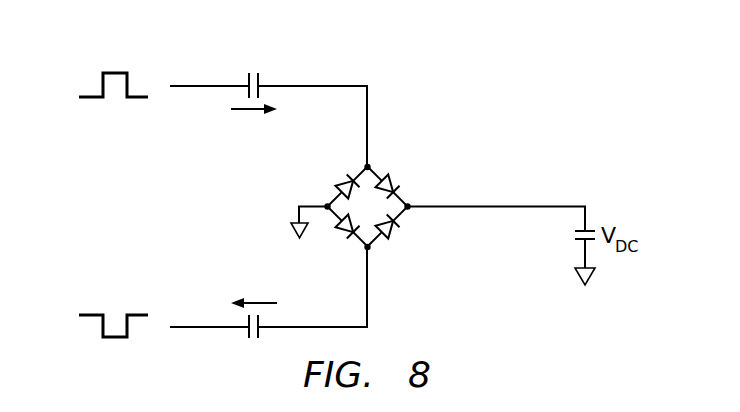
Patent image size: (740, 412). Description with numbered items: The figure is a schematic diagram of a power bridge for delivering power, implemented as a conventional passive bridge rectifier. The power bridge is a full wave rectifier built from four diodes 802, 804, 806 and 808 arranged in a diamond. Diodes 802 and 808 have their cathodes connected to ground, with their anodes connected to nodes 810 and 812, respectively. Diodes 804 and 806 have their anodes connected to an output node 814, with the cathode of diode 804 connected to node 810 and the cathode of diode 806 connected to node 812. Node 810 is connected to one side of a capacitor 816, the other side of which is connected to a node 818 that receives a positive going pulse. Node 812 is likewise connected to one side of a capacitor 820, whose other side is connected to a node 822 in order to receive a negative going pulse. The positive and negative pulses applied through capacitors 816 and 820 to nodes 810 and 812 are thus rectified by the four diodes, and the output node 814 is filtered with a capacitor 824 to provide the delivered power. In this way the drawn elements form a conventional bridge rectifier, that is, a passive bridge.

The diode 802 is at (348, 177).
The diode 804 is at (393, 190).
The diode 806 is at (393, 225).
The diode 808 is at (345, 228).
The node 810 is at (370, 163).
The node 812 is at (375, 252).
The output node 814 is at (413, 201).
The capacitor 816 is at (253, 73).
The node 818 is at (203, 87).
The capacitor 820 is at (253, 338).
The node 822 is at (205, 327).
The capacitor 824 is at (573, 237).